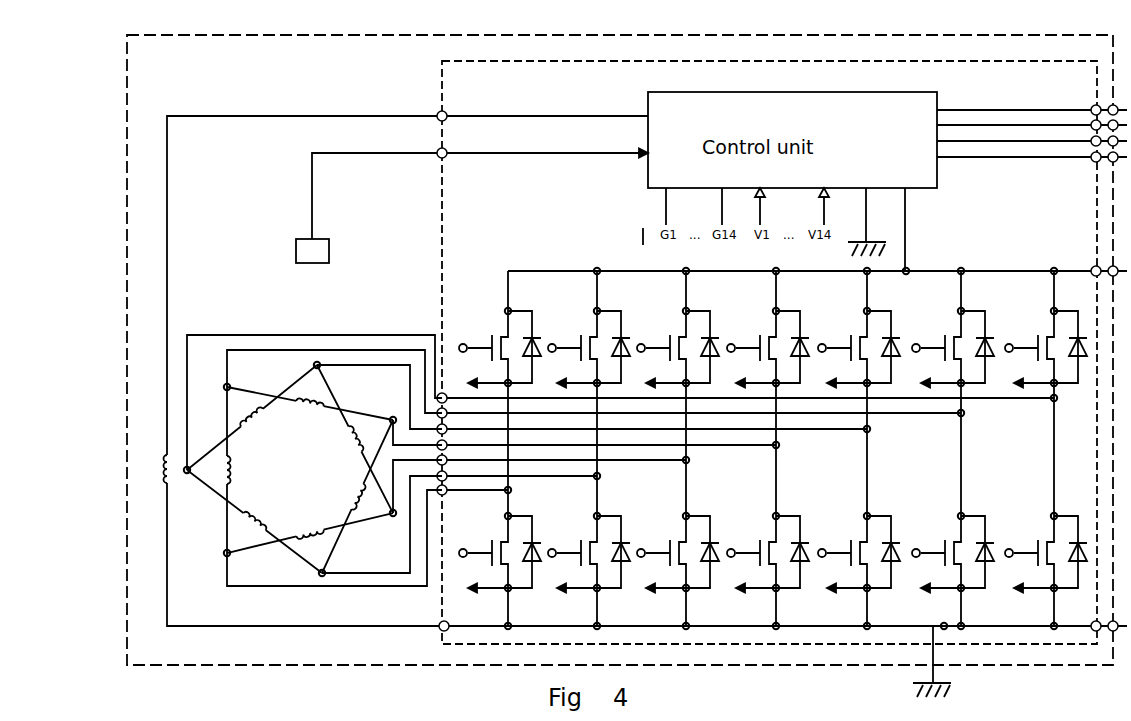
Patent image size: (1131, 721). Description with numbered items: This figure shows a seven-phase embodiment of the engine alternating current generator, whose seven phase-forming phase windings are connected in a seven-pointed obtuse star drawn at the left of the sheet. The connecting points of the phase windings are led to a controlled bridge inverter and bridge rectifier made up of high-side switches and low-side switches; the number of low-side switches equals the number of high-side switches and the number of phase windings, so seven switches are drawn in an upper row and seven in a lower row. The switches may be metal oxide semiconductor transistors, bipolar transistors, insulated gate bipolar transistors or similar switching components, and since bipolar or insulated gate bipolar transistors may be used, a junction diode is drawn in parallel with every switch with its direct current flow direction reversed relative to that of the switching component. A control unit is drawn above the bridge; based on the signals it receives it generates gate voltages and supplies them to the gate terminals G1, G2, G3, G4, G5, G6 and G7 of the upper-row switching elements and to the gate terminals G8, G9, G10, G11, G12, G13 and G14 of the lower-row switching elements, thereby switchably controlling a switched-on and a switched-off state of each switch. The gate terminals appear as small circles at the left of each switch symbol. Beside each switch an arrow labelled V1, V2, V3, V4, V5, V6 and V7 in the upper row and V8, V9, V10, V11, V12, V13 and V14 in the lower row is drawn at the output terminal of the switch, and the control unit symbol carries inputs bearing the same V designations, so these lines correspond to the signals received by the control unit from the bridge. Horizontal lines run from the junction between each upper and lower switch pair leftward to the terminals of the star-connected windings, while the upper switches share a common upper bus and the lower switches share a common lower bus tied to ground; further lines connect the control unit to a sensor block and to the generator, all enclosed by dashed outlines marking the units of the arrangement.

The gate terminal G1 is at (497, 347).
The gate terminal G2 is at (586, 347).
The gate terminal G3 is at (675, 347).
The gate terminal G4 is at (765, 347).
The gate terminal G5 is at (856, 347).
The gate terminal G6 is at (950, 347).
The gate control signal / switching transistor 7 G7 is at (1043, 347).
The gate control signal / switching transistor 8 G8 is at (497, 552).
The gate control signal / switching transistor 9 G9 is at (586, 552).
The gate control signal / switching transistor 10 G10 is at (675, 552).
The gate control signal / switching transistor 11 G11 is at (765, 552).
The gate control signal / switching transistor 12 G12 is at (856, 552).
The gate control signal / switching transistor 13 G13 is at (950, 552).
The gate control signal / switching transistor 14 G14 is at (1043, 552).
The voltage measurement signal 1 V1 is at (483, 376).
The voltage measurement signal 2 V2 is at (572, 376).
The voltage measurement signal 3 V3 is at (661, 376).
The voltage measurement signal 4 V4 is at (751, 376).
The voltage measurement signal 5 V5 is at (842, 376).
The voltage measurement signal 6 V6 is at (936, 376).
The voltage measurement signal 7 V7 is at (1029, 376).
The voltage measurement signal 8 V8 is at (483, 581).
The voltage measurement signal 9 V9 is at (572, 581).
The voltage measurement signal 10 V10 is at (661, 581).
The voltage measurement signal 11 V11 is at (751, 581).
The voltage measurement signal 12 V12 is at (842, 581).
The voltage measurement signal 13 V13 is at (936, 581).
The voltage measurement signal 14 V14 is at (1029, 581).